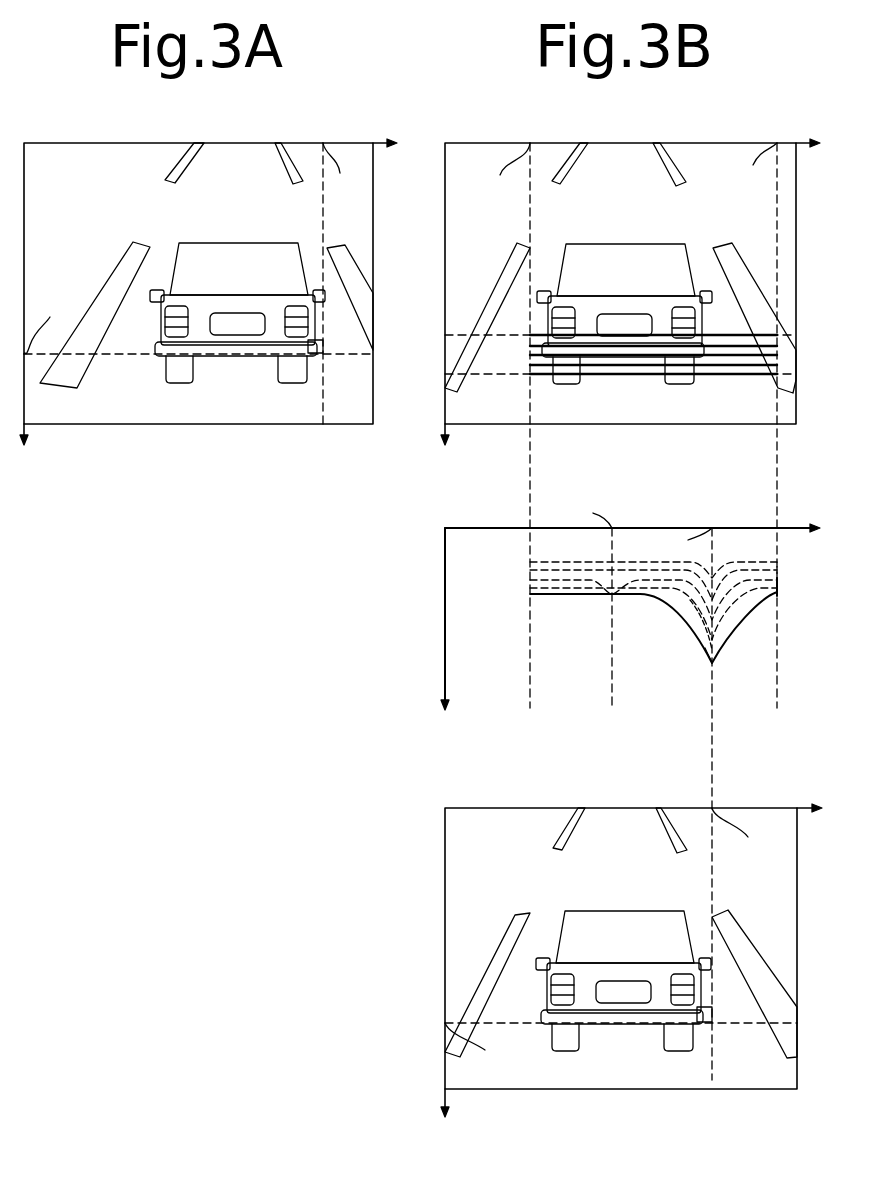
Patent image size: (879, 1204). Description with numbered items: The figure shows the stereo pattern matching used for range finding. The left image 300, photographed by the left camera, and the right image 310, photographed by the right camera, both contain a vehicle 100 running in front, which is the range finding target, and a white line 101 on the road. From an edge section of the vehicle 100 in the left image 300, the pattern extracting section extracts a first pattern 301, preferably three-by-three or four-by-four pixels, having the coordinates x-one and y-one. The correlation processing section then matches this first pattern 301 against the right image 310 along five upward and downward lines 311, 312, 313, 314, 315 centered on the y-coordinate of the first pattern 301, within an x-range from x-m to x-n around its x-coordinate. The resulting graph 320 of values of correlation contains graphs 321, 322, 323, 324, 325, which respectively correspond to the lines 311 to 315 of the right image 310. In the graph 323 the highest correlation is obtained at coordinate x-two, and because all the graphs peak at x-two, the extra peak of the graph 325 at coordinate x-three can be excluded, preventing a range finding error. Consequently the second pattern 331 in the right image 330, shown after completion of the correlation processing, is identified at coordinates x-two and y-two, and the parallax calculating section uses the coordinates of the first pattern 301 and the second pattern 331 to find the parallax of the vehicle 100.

In FIG. 3A, the vehicle running in front 100 is at (222, 243).
In FIG. 3B, the vehicle running in front 100 is at (605, 243).
In FIG. 3A, the white line on a road 101 is at (173, 170).
In FIG. 3B, the white line on a road 101 is at (740, 253).
In FIG. 3A, the left image 300 is at (180, 424).
In FIG. 3A, the first pattern 301 is at (309, 348).
In FIG. 3B, the right image 310 is at (628, 424).
In FIG. 3B, the line 311 is at (540, 376).
In FIG. 3B, the line 312 is at (588, 366).
In FIG. 3B, the line 313 is at (633, 356).
In FIG. 3B, the line 314 is at (683, 347).
In FIG. 3B, the line 315 is at (748, 336).
In FIG. 3B, the graph of values of correlation 320 is at (445, 615).
In FIG. 3B, the graph 321 is at (550, 562).
In FIG. 3B, the graph 322 is at (680, 582).
In FIG. 3B, the graph 323 is at (565, 596).
In FIG. 3B, the graph 324 is at (705, 612).
In FIG. 3B, the graph 325 is at (570, 570).
In FIG. 3B, the right image after completion of correlation processing 330 is at (445, 932).
In FIG. 3B, the second pattern 331 is at (705, 1024).